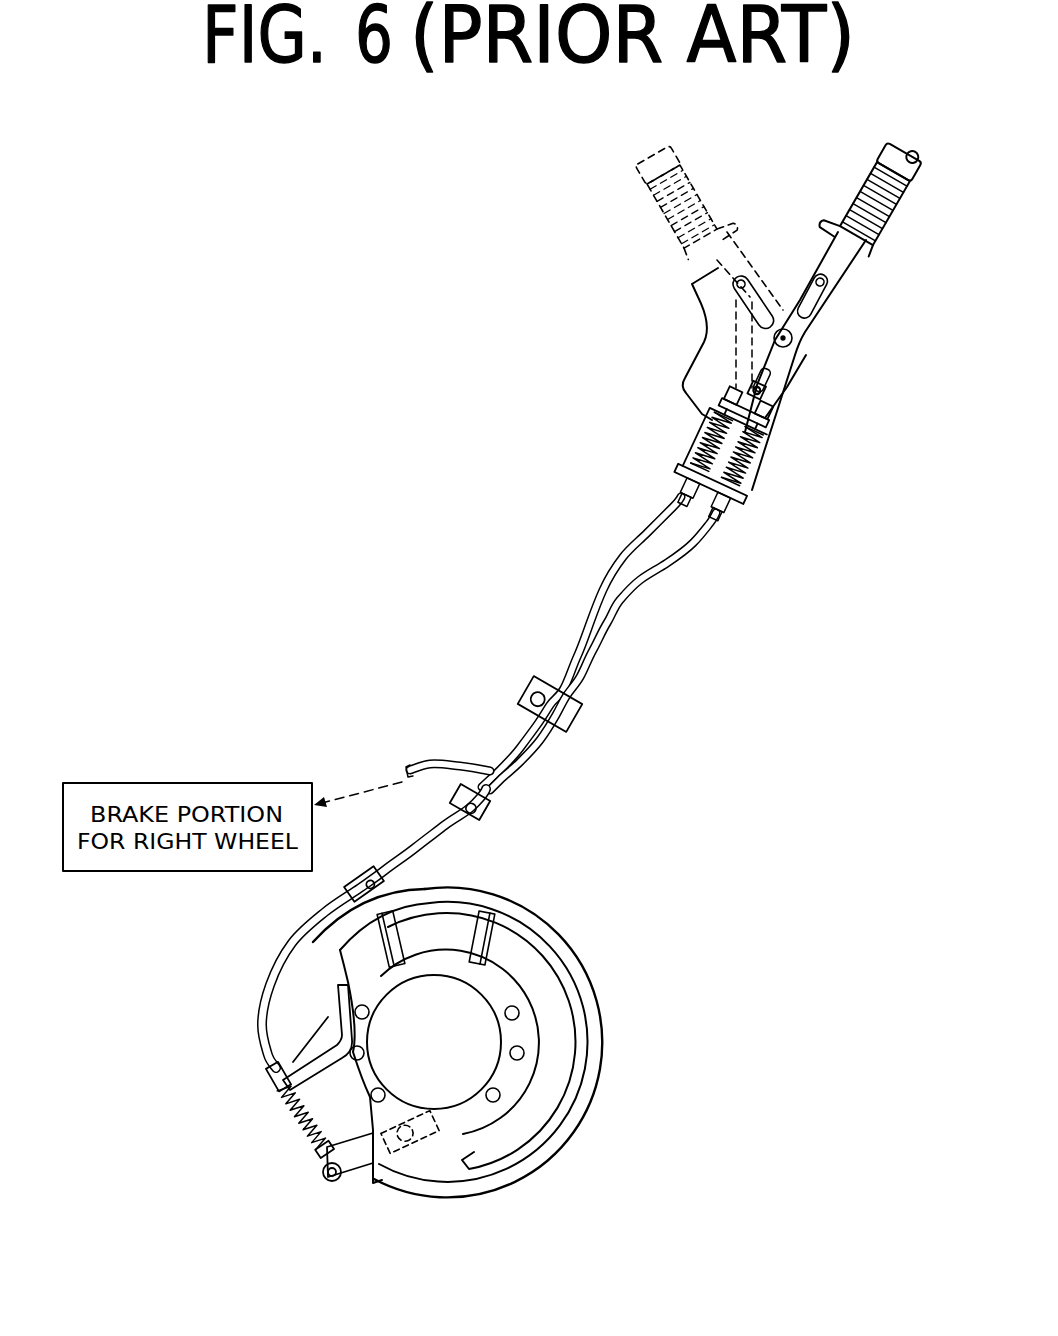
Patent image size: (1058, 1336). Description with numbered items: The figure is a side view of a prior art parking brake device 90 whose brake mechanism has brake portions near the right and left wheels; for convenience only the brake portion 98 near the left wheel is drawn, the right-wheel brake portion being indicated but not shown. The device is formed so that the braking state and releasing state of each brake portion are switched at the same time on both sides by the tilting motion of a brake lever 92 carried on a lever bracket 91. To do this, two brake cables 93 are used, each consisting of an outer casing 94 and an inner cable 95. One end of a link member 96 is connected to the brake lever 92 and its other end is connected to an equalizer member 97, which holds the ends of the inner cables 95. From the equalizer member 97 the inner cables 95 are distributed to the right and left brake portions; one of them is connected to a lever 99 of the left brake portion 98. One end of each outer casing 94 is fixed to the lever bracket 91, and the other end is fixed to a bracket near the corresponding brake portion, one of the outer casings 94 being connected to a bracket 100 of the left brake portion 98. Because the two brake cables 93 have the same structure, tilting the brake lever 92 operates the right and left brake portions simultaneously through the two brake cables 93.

The parking brake device 90 is at (507, 277).
The lever bracket 91 is at (692, 366).
The brake lever 92 is at (843, 283).
The brake cable 93 is at (633, 543).
The outer casing 94 is at (663, 520).
The inner cable 95 is at (716, 400).
The link member 96 is at (796, 326).
The equalizer member 97 is at (770, 415).
The brake portion 98 is at (568, 950).
The lever 99 is at (358, 1176).
The bracket 100 is at (320, 1047).